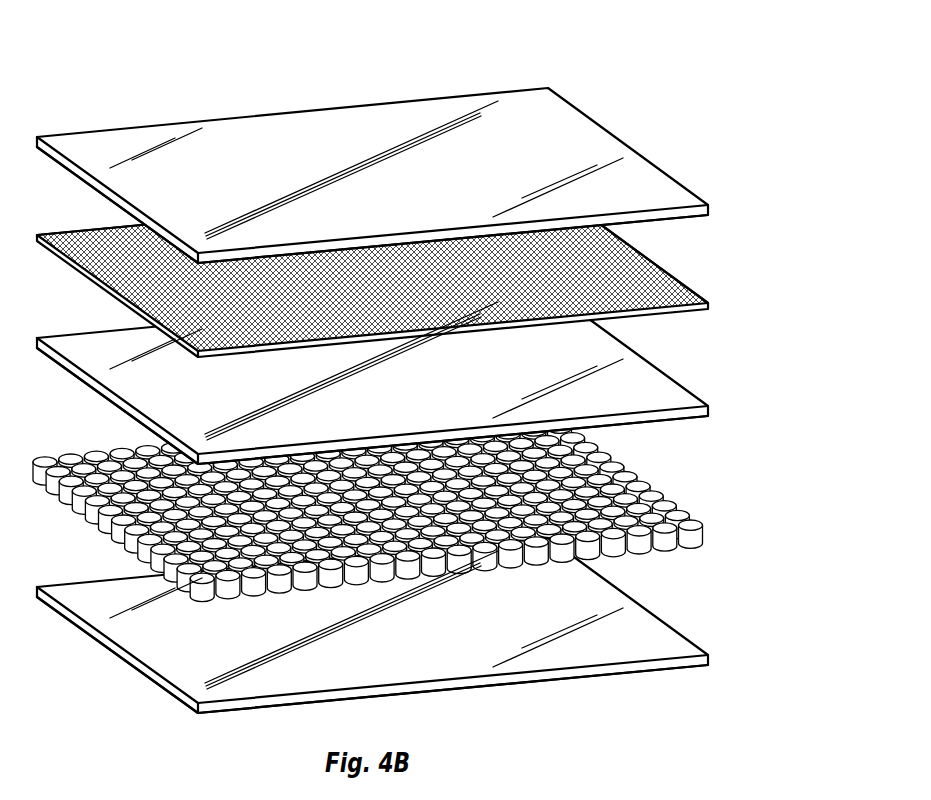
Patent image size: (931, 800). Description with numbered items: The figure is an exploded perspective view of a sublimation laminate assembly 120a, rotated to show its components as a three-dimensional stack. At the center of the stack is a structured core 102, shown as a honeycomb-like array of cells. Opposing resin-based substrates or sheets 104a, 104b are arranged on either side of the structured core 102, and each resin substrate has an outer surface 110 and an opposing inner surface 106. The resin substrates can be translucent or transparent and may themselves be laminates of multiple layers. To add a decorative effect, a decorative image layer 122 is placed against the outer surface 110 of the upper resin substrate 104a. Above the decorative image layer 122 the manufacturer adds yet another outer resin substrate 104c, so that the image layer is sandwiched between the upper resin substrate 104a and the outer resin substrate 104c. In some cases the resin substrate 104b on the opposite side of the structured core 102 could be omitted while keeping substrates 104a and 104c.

The laminate assembly 120a is at (110, 64).
The structured core 102 is at (702, 522).
The upper resin substrate 104a is at (688, 388).
The resin substrate 104b is at (688, 638).
The outer resin substrate 104c is at (688, 186).
The inner surface 106 is at (677, 221).
The outer surface 110 is at (657, 175).
The decorative image layer 122 is at (690, 283).